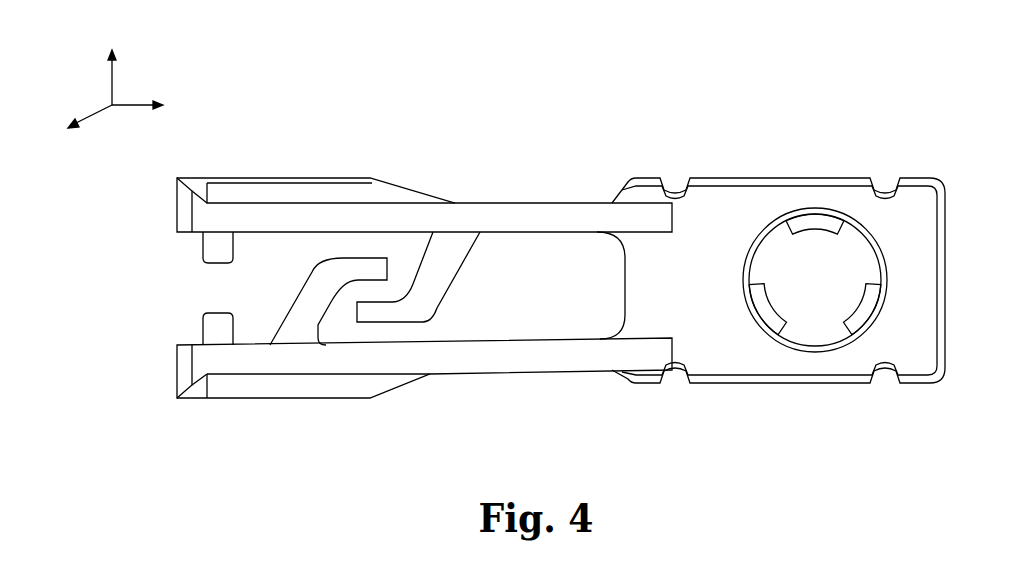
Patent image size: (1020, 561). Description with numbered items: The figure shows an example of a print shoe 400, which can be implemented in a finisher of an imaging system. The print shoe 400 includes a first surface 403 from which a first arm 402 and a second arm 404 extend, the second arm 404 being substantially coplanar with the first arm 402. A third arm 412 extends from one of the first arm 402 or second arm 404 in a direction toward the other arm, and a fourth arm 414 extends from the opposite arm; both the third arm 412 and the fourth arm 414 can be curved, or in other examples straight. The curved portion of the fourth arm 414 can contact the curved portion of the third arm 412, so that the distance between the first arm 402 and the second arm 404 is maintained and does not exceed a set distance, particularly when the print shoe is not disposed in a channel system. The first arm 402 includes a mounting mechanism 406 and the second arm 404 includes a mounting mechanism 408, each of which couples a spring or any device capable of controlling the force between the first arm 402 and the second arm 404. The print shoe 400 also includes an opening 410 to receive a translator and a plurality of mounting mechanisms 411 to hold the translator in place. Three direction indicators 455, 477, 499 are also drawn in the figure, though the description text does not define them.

The print shoe 400 is at (498, 148).
The first arm 402 is at (241, 190).
The first surface 403 is at (625, 285).
The second arm 404 is at (490, 372).
The mounting mechanism 406 is at (203, 248).
The mounting mechanism 408 is at (203, 328).
The opening 410 is at (815, 320).
The mounting mechanisms 411 is at (815, 214).
The third arm 412 is at (320, 263).
The fourth arm 414 is at (423, 310).
The first axis direction 455 is at (72, 125).
The second axis direction 477 is at (157, 105).
The third axis direction 499 is at (113, 63).